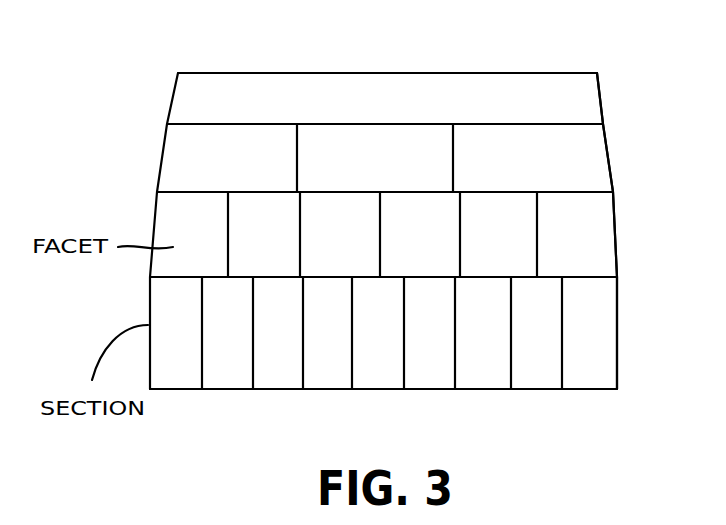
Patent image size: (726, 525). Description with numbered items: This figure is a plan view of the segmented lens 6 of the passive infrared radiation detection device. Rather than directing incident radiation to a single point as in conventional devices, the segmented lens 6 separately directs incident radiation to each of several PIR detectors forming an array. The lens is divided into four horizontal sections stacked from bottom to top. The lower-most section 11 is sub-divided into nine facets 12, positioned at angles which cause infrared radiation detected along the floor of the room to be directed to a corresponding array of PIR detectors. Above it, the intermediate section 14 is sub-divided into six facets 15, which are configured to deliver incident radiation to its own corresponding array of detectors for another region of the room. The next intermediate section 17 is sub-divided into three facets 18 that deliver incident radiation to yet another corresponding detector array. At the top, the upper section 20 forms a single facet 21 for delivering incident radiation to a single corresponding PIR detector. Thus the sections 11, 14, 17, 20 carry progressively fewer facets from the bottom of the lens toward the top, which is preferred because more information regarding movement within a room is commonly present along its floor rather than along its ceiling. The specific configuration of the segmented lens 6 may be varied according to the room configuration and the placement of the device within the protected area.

The segmented lens 6 is at (175, 93).
The single facet 21 is at (305, 88).
The upper section 20 is at (603, 99).
The facets of intermediate section 18 is at (425, 140).
The intermediate section 17 is at (608, 157).
The facets of intermediate section 15 is at (255, 207).
The intermediate section 14 is at (616, 232).
The facets 12 is at (232, 377).
The lower-most section 11 is at (617, 327).